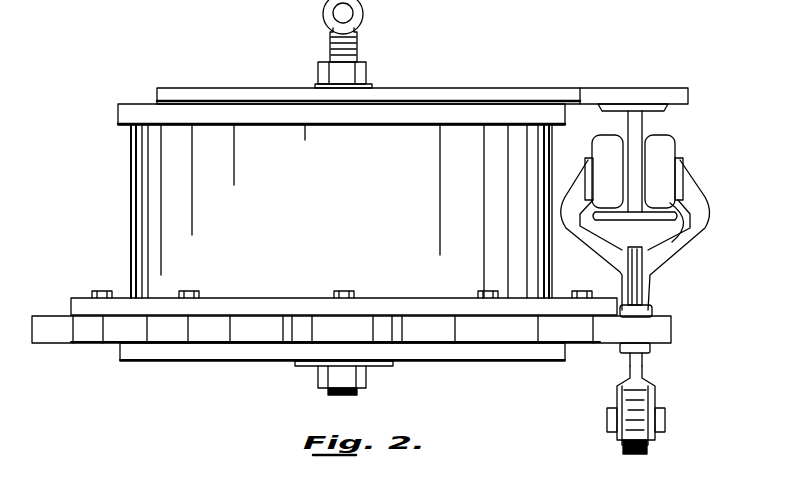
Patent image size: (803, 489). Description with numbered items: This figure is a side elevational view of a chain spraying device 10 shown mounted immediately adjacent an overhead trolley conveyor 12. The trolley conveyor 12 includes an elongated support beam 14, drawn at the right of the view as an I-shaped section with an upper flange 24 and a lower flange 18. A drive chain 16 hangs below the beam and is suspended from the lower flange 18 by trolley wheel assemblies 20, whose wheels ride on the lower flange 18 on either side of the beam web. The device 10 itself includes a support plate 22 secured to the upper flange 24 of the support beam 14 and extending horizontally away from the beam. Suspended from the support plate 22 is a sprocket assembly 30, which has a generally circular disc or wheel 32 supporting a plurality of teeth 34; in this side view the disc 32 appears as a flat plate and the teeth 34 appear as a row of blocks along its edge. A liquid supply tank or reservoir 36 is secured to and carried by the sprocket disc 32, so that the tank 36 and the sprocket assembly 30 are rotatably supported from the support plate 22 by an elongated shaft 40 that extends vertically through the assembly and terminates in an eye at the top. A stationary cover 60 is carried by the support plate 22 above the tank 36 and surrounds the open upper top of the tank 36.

The chain spraying device 10 is at (94, 96).
The overhead trolley conveyor 12 is at (664, 264).
The support beam 14 is at (640, 122).
The drive chain 16 is at (650, 306).
The lower flange 18 is at (662, 226).
The trolley wheel assemblies 20 is at (706, 241).
The support plate 22 is at (482, 86).
The upper flange 24 is at (634, 106).
The sprocket assembly 30 is at (122, 291).
The sprocket disc 32 is at (278, 298).
The teeth 34 is at (353, 328).
The liquid supply tank 36 is at (130, 186).
The shaft 40 is at (358, 48).
The stationary cover 60 is at (129, 108).